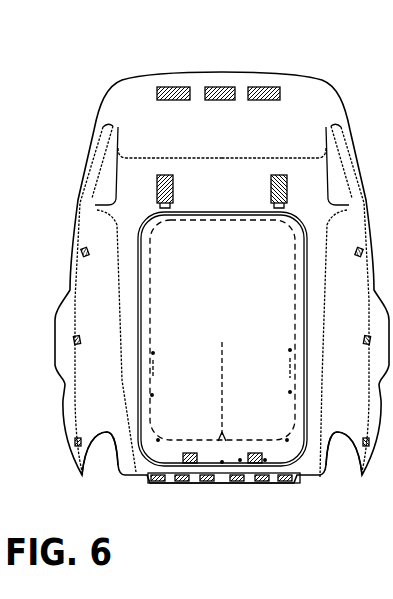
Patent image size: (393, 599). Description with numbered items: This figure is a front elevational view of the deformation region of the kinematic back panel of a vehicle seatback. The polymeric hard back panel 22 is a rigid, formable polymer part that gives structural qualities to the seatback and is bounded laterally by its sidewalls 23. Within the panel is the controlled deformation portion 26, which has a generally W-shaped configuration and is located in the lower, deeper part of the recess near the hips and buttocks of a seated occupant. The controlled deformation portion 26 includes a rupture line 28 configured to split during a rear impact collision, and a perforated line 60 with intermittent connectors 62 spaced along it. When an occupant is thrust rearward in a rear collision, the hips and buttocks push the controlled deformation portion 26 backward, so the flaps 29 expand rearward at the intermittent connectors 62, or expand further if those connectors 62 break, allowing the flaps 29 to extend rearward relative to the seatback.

The polymeric hard back panel 22 is at (307, 100).
The sidewalls 23 is at (87, 416).
The controlled deformation portion 26 is at (193, 483).
The rupture line 28 is at (242, 443).
The flaps 29 is at (196, 385).
The perforated line 60 is at (298, 402).
The intermittent connector 62 is at (320, 477).